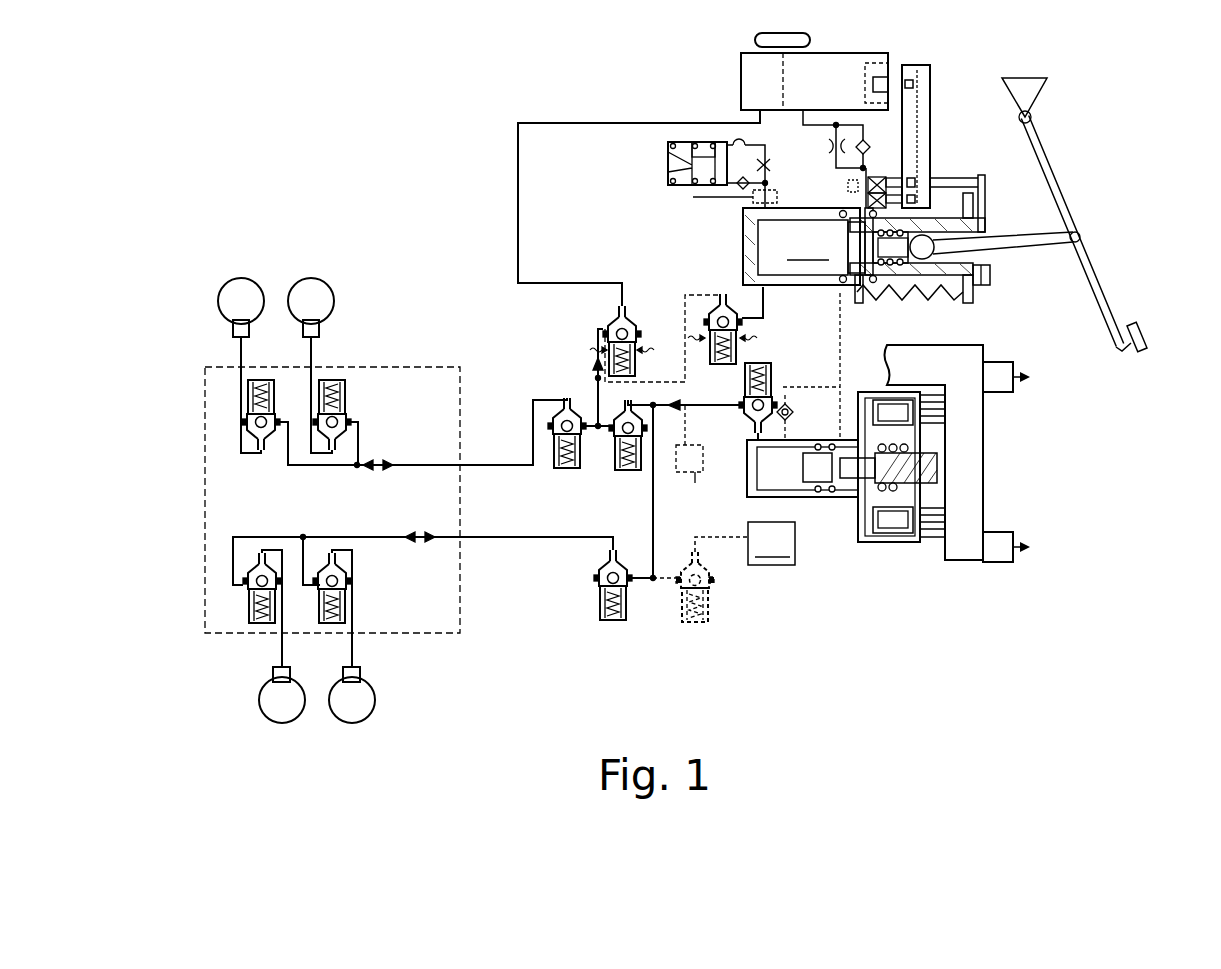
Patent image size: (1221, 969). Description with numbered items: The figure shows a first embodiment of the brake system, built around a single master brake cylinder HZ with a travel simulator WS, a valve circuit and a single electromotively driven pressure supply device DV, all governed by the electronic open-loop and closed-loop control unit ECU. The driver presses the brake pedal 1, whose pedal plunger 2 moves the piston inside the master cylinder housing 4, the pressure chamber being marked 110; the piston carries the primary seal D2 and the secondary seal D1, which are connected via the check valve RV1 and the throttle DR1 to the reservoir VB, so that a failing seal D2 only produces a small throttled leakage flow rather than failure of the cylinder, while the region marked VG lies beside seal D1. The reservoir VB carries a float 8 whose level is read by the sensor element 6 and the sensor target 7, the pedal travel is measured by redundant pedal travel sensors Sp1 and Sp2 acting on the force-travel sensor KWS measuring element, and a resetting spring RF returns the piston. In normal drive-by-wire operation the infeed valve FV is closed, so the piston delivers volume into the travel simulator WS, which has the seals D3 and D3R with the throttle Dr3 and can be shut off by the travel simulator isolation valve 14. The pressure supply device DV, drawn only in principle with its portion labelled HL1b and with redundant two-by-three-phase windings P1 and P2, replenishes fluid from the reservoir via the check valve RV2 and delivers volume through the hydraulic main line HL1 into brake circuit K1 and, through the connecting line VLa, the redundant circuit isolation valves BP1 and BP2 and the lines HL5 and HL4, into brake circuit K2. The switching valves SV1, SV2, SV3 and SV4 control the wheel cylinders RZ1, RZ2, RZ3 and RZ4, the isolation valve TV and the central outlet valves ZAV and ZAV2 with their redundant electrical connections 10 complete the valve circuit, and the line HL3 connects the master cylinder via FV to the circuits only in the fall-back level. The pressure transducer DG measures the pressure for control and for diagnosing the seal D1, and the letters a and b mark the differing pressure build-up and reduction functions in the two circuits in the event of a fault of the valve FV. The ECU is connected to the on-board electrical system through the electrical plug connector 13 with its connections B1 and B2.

The brake pedal 1 is at (1150, 336).
The pedal plunger 2 is at (1016, 252).
The master brake cylinder housing 4 is at (743, 251).
The sensor element for level transducer 6 is at (913, 84).
The sensor target 7 is at (908, 75).
The float in the reservoir 8 is at (865, 72).
The redundant electrical connection 10 is at (594, 350).
The electrical plug connector 13 is at (995, 368).
The travel simulator isolation valve 14 is at (701, 200).
The master cylinder piston chamber 110 is at (831, 245).
The reservoir VB is at (866, 55).
The master brake cylinder HZ is at (743, 226).
The force-travel sensor KWS is at (958, 212).
The pedal travel sensor Sp1 is at (913, 182).
The pedal travel sensor Sp2 is at (913, 198).
The secondary seal D1 is at (845, 212).
The primary seal D2 is at (895, 300).
The travel simulator seal D3 is at (714, 142).
The redundant travel simulator seal D3R is at (697, 142).
The throttle Dr3 is at (700, 165).
The travel simulator WS is at (668, 180).
The throttle DR1 is at (830, 150).
The check valve RV1 is at (868, 141).
The check valve RV2 is at (788, 402).
The resetting spring RF is at (926, 300).
The displacement volume VG is at (844, 181).
The central outlet valve ZAV is at (632, 313).
The central outlet valve ZAV2 is at (710, 602).
The hydraulic main line HL1 is at (712, 416).
The pressure supply unit HL1b is at (802, 468).
The hydraulic line HL3 is at (691, 340).
The hydraulic line connection HL4 is at (360, 540).
The hydraulic line connection HL5 is at (372, 468).
The infeed valve FV is at (735, 401).
The pressure transducer DG is at (694, 462).
The circuit isolation valve BP1 is at (628, 470).
The circuit isolation valve BP2 is at (565, 470).
The connecting line VLa is at (621, 455).
The isolation valve TV is at (618, 620).
The brake circuit K1 is at (443, 540).
The brake circuit K2 is at (403, 462).
The pressure build-up/reduction function a is at (411, 557).
The pressure build-up/reduction function b is at (521, 409).
The switching valve SV1 is at (250, 622).
The switching valve SV2 is at (345, 620).
The switching valve SV3 is at (250, 380).
The switching valve SV4 is at (346, 395).
The wheel cylinder RZ1 is at (270, 725).
The wheel cylinder RZ2 is at (348, 725).
The wheel cylinder RZ3 is at (234, 286).
The wheel cylinder RZ4 is at (306, 286).
The electronic open-loop and closed-loop control unit ECU is at (934, 452).
The bus 1 B1 is at (1038, 375).
The bus 2 B2 is at (1038, 547).
The electromotive pressure supply device DV is at (905, 537).
The phase connection P1 is at (945, 410).
The phase connection P2 is at (930, 537).